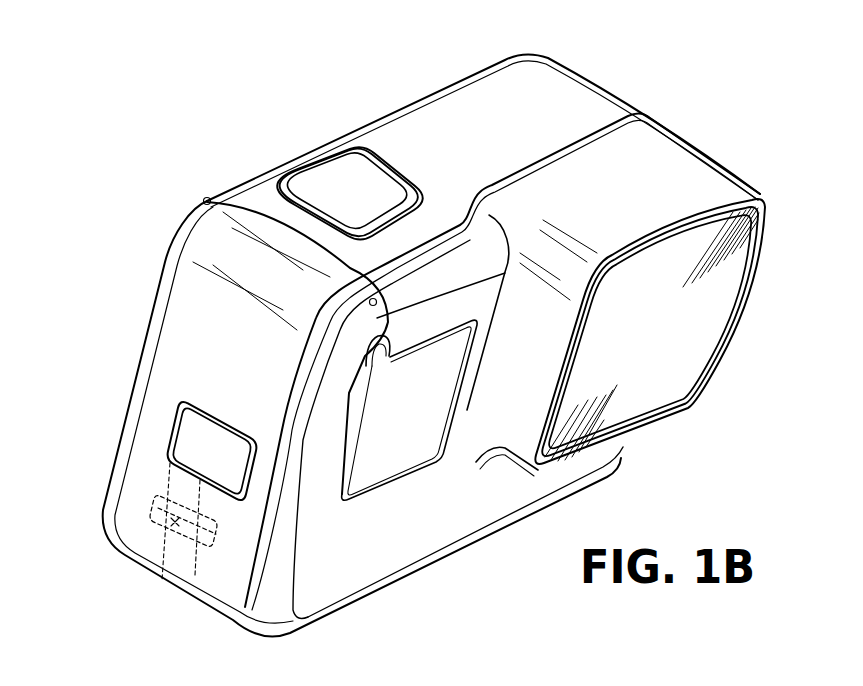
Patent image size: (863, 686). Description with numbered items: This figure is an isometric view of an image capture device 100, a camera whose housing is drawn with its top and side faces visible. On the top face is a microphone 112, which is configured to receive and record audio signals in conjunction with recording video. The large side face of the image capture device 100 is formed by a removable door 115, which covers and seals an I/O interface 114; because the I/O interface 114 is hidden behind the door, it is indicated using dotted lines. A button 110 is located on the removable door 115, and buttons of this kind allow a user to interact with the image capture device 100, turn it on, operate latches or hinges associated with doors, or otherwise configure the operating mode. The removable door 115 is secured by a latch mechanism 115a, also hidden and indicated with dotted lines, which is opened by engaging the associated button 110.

The image capture device 100 is at (474, 345).
The button 110 is at (134, 451).
The microphone 112 is at (443, 137).
The I/O interface 114 is at (117, 509).
The removable door 115 is at (127, 346).
The latch mechanism 115a is at (236, 377).